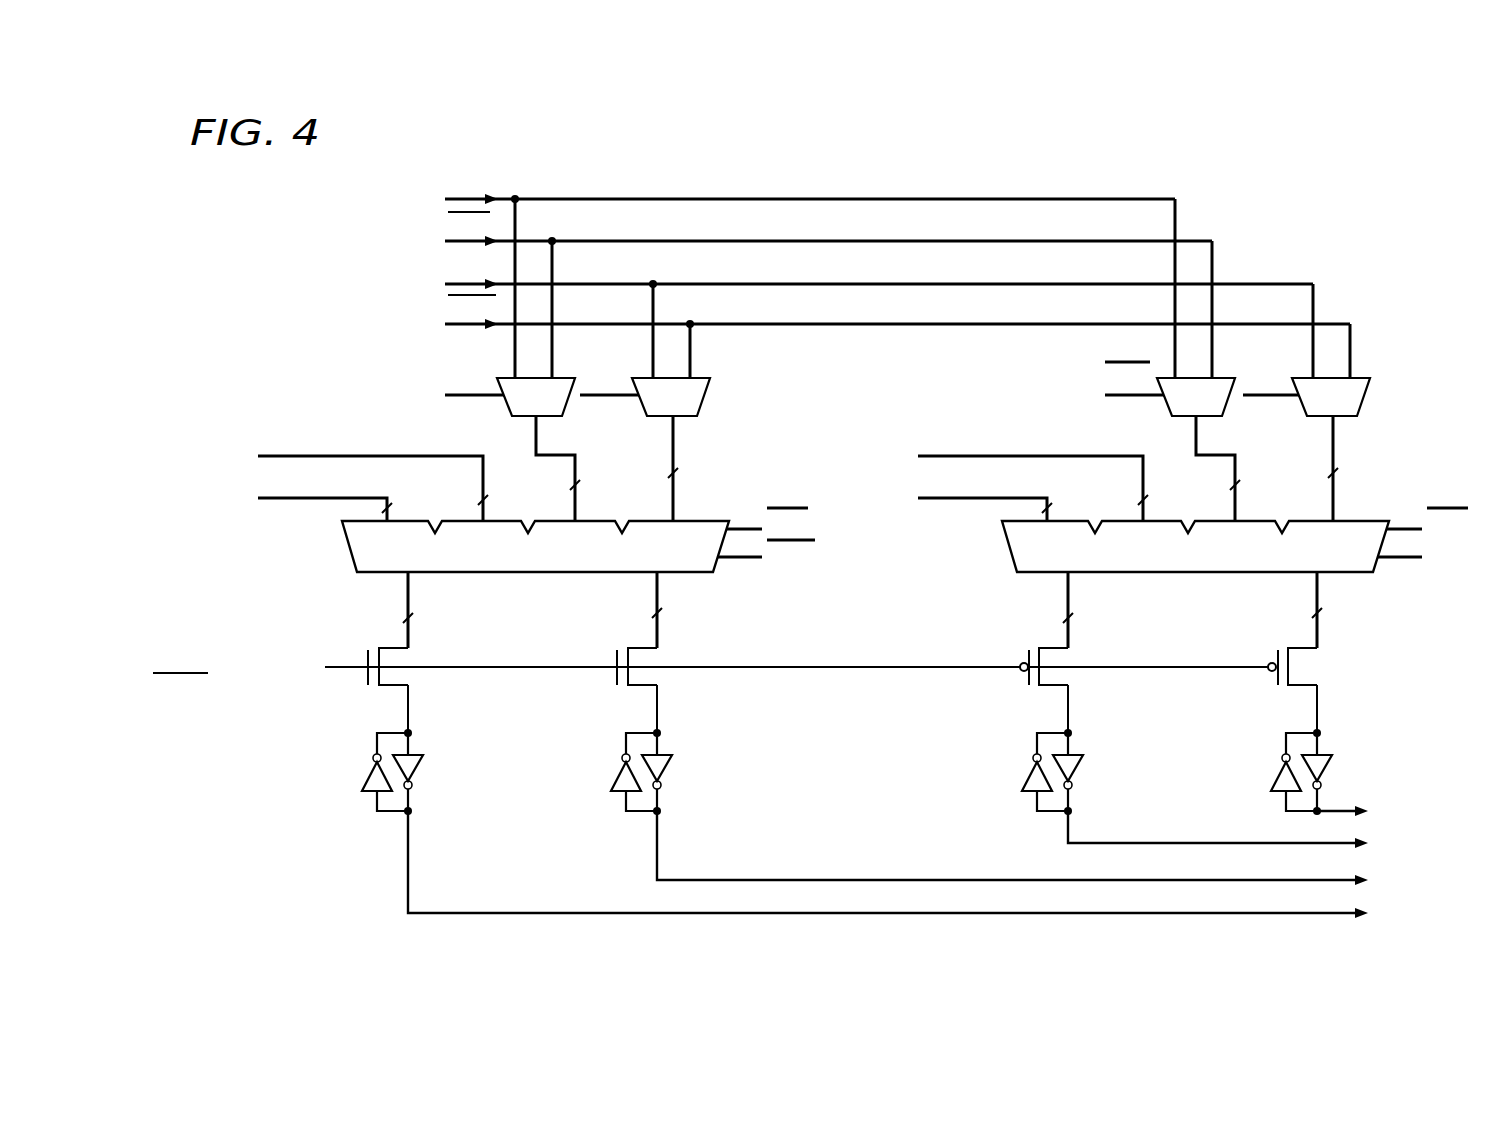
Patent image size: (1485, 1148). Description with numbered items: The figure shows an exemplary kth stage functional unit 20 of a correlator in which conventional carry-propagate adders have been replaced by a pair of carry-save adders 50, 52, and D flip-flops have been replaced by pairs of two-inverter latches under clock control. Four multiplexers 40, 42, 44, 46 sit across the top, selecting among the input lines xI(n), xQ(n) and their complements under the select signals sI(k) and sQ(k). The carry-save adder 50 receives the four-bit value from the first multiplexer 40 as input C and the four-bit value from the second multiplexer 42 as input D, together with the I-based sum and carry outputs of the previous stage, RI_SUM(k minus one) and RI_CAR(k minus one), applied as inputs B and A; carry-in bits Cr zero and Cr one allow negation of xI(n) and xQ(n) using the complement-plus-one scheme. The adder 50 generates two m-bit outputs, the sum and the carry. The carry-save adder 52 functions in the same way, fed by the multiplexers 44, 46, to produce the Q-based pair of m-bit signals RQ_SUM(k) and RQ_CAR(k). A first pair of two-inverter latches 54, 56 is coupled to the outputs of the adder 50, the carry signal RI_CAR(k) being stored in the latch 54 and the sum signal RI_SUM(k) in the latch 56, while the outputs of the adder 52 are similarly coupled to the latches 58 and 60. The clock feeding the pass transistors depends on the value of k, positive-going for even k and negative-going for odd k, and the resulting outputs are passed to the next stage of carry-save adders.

The functional unit 20 is at (274, 200).
The first multiplexer 40 is at (499, 413).
The second multiplexer 42 is at (641, 413).
The multiplexer 44 is at (1162, 413).
The multiplexer 46 is at (1363, 389).
The carry-save adder 50 is at (345, 545).
The carry-save adder 52 is at (1005, 545).
The 2-inverter latch 54 is at (372, 793).
The 2-inverter latch 56 is at (614, 793).
The 2-inverter latch 58 is at (1032, 793).
The 2-inverter latch 60 is at (1277, 793).